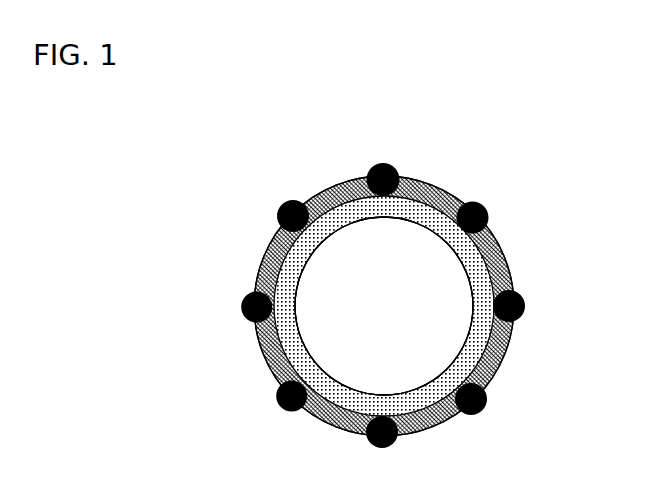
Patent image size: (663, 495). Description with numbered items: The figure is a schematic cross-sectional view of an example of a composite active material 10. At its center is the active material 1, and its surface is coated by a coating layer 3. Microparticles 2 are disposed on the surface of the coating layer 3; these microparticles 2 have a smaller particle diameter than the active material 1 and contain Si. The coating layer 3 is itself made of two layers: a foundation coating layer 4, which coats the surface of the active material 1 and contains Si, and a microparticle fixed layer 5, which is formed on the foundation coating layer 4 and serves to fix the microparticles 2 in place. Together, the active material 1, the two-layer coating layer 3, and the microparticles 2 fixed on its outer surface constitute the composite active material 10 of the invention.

The composite active material 10 is at (470, 160).
The active material 1 is at (442, 263).
The microparticles 2 is at (242, 307).
The coating layer 3 is at (602, 330).
The foundation coating layer 4 is at (475, 343).
The microparticle fixed layer 5 is at (483, 368).